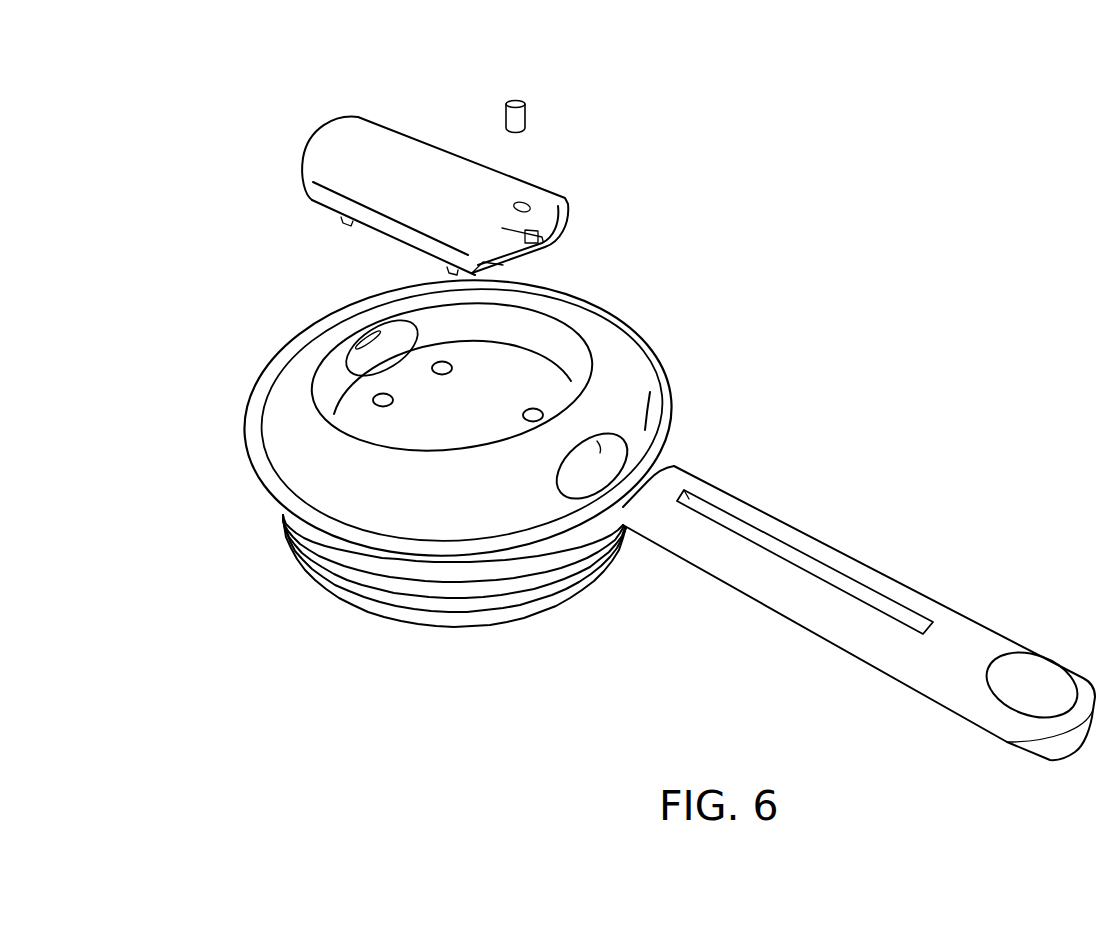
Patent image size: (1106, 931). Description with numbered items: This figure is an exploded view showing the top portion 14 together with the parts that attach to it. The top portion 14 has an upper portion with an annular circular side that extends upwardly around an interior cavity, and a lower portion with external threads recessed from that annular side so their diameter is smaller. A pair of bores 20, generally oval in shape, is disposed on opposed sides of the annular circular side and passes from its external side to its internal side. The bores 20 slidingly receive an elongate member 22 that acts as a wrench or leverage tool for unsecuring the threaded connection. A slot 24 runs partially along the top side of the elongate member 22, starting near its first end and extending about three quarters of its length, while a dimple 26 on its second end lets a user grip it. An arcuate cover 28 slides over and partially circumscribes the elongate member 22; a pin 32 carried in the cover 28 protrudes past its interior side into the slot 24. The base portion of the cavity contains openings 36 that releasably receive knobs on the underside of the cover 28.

The top portion 14 is at (290, 412).
The bores 20 is at (620, 450).
The elongate member 22 is at (967, 637).
The slot 24 is at (825, 573).
The dimple 26 is at (1033, 677).
The cover 28 is at (386, 138).
The pin 32 is at (517, 101).
The openings 36 is at (450, 367).